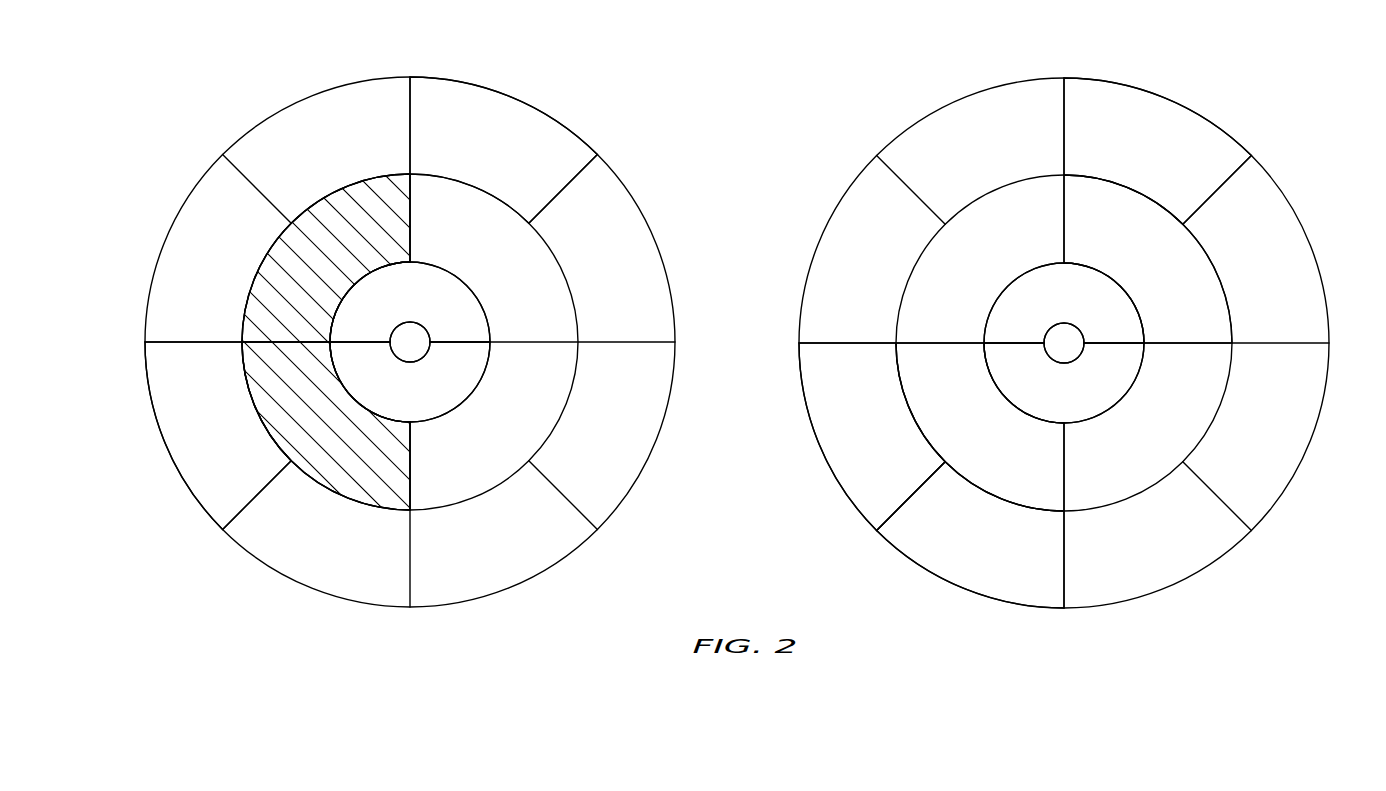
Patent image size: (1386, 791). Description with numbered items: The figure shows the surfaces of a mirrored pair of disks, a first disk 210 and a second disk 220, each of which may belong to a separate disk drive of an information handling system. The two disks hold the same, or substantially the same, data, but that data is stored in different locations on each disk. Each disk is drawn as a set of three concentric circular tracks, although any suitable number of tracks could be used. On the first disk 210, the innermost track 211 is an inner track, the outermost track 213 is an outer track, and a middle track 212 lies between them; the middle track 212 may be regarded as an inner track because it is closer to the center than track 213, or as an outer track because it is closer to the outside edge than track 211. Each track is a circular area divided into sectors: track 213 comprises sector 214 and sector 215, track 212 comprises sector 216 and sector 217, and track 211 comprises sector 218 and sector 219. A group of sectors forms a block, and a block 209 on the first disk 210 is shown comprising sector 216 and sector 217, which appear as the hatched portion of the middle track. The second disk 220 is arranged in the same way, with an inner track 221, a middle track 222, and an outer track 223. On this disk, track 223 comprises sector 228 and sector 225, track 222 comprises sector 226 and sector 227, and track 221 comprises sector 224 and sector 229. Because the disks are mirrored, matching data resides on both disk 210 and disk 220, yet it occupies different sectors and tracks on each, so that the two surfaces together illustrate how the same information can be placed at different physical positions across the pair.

The disk 210 is at (200, 80).
The block 209 is at (246, 372).
The track 211 is at (482, 382).
The track 212 is at (553, 435).
The track 213 is at (633, 485).
The sector 214 is at (477, 154).
The sector 215 is at (190, 439).
The sector 216 is at (304, 444).
The sector 217 is at (304, 269).
The sector 218 is at (392, 404).
The sector 219 is at (392, 306).
The disk 220 is at (1280, 78).
The track 221 is at (1136, 383).
The track 222 is at (1207, 436).
The track 223 is at (1287, 486).
The sector 224 is at (1045, 306).
The sector 225 is at (1130, 154).
The sector 226 is at (1134, 268).
The sector 227 is at (957, 444).
The sector 228 is at (844, 438).
The sector 229 is at (1045, 404).